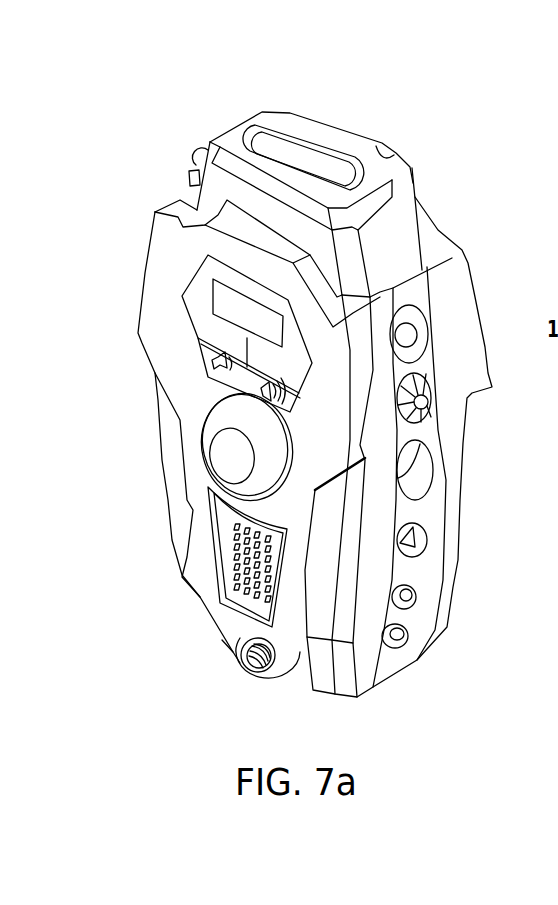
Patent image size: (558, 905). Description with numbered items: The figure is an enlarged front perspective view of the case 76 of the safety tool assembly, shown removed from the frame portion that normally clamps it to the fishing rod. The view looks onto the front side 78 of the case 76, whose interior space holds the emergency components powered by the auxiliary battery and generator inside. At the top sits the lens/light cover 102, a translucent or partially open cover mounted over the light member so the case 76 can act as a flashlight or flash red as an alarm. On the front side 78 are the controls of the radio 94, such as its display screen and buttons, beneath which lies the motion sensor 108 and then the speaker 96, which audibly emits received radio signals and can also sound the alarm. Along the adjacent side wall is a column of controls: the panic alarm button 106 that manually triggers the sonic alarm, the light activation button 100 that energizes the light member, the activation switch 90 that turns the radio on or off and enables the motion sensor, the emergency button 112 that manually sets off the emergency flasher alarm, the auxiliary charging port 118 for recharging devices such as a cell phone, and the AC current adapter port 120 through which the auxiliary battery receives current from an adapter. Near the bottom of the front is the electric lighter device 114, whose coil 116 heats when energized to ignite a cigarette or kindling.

The case 76 is at (119, 161).
The front side 78 is at (165, 351).
The activation switch 90 is at (420, 475).
The radio 94 is at (208, 297).
The speaker 96 is at (228, 548).
The light activation button 100 is at (425, 376).
The lens/light cover 102 is at (393, 226).
The panic alarm button 106 is at (413, 322).
The motion sensor 108 is at (223, 447).
The emergency button 112 is at (415, 545).
The electric lighter device 114 is at (233, 657).
The coil 116 is at (262, 657).
The auxiliary charging port 118 is at (400, 596).
The AC current adapter port 120 is at (395, 643).